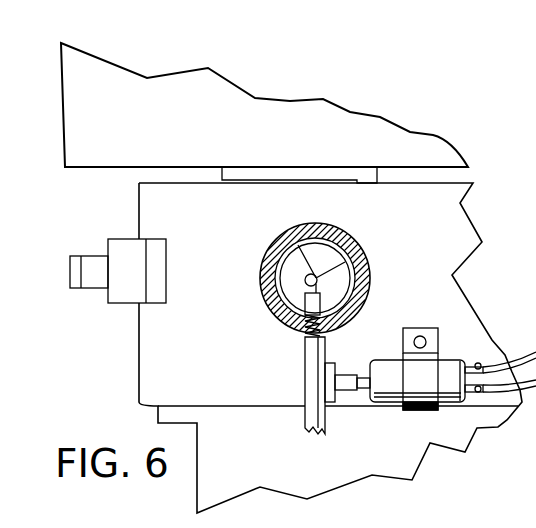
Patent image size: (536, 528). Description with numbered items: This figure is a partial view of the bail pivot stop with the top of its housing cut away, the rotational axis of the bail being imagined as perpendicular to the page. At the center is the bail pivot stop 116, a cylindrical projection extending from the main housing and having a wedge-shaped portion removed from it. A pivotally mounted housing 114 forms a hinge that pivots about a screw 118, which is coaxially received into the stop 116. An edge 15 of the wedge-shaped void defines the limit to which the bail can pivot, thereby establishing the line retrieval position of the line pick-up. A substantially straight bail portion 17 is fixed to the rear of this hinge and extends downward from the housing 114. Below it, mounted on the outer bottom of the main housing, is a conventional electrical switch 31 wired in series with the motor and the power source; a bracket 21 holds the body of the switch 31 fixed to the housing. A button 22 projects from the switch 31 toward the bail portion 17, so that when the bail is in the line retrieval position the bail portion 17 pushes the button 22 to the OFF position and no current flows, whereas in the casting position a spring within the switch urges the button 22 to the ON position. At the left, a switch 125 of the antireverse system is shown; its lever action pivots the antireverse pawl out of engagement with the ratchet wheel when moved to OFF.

The pivotally mounted housing 114 is at (273, 242).
The bail pivot stop 116 is at (318, 255).
The screw 118 is at (353, 260).
The edge 15 is at (322, 303).
The straight bail portion 17 is at (302, 352).
The button 22 is at (337, 395).
The switch 31 is at (387, 360).
The bracket 21 is at (422, 410).
The switch 125 is at (77, 292).